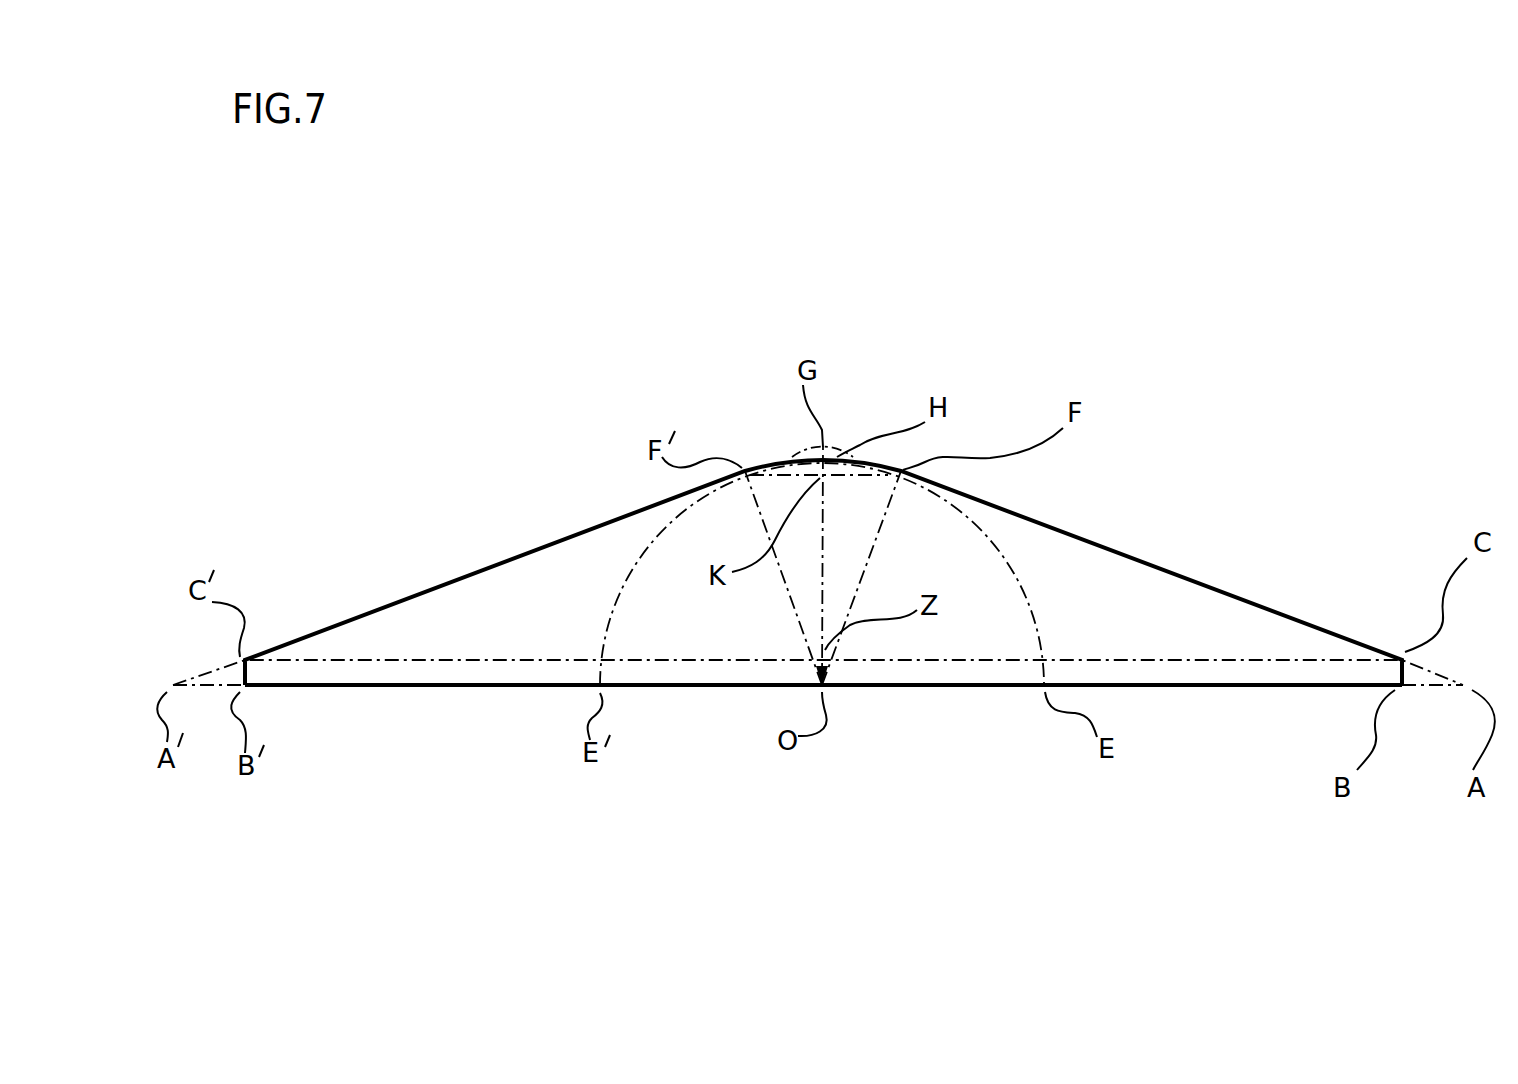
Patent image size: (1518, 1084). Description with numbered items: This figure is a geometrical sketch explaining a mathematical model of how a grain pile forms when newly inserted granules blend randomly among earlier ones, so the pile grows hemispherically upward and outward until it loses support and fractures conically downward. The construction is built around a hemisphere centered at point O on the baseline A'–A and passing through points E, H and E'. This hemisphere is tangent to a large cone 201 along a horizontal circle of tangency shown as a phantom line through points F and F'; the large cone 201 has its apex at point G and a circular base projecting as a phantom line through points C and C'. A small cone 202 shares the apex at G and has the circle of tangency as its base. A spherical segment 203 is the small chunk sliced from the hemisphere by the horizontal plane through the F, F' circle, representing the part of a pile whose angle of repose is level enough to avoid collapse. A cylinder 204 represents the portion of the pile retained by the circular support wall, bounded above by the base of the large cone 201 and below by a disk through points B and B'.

The large cone 201 is at (1103, 610).
The small cone 202 is at (813, 455).
The spherical segment 203 is at (845, 475).
The cylinder 204 is at (1152, 672).